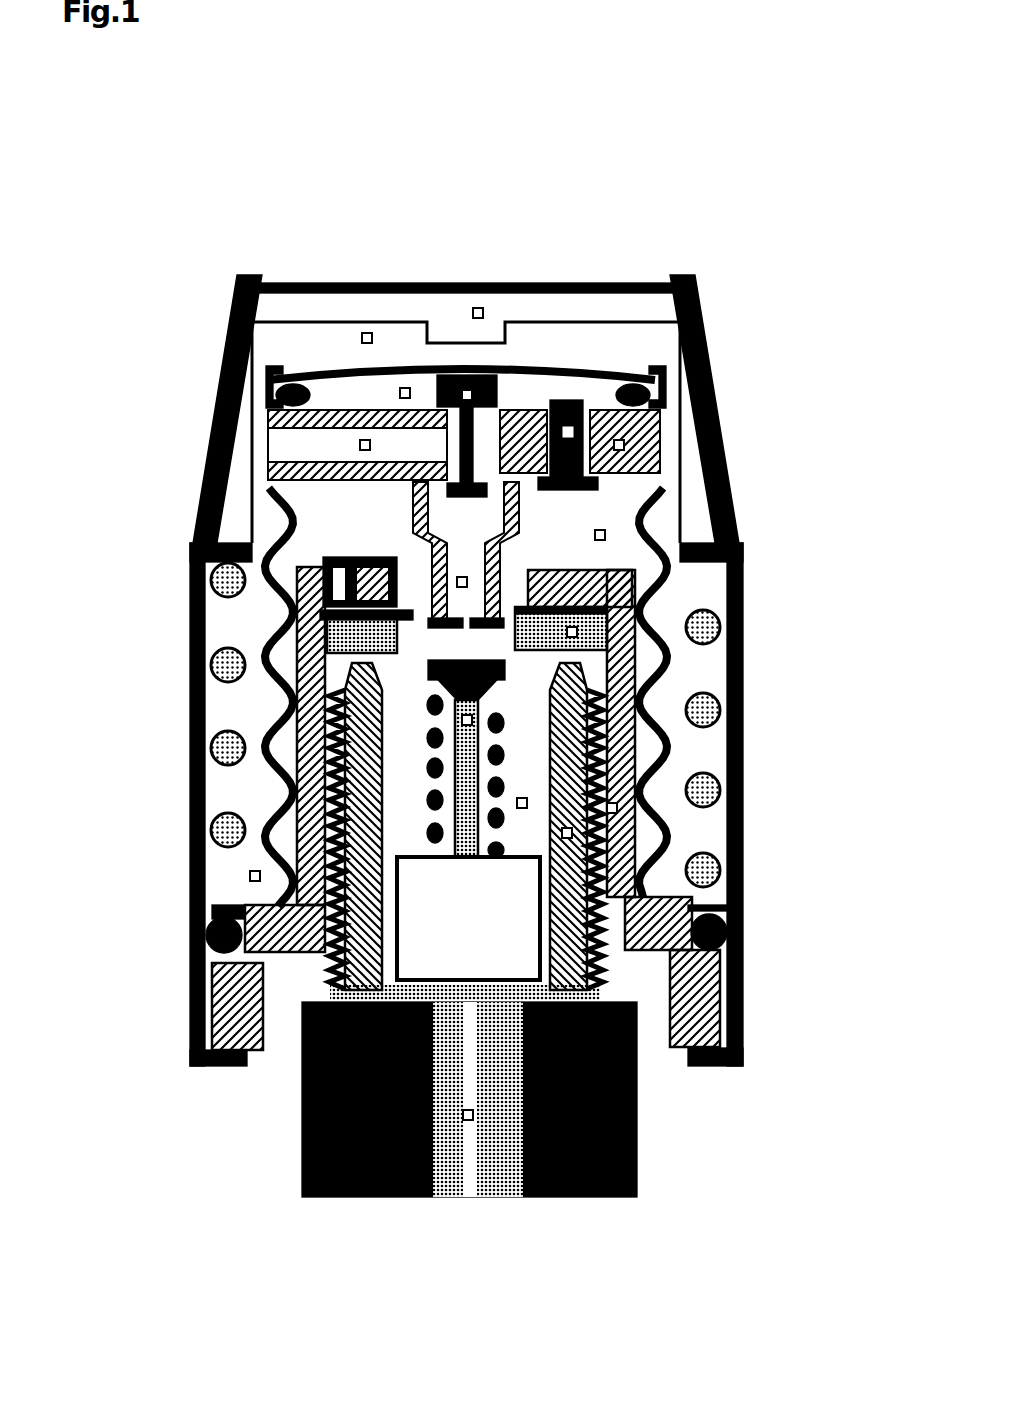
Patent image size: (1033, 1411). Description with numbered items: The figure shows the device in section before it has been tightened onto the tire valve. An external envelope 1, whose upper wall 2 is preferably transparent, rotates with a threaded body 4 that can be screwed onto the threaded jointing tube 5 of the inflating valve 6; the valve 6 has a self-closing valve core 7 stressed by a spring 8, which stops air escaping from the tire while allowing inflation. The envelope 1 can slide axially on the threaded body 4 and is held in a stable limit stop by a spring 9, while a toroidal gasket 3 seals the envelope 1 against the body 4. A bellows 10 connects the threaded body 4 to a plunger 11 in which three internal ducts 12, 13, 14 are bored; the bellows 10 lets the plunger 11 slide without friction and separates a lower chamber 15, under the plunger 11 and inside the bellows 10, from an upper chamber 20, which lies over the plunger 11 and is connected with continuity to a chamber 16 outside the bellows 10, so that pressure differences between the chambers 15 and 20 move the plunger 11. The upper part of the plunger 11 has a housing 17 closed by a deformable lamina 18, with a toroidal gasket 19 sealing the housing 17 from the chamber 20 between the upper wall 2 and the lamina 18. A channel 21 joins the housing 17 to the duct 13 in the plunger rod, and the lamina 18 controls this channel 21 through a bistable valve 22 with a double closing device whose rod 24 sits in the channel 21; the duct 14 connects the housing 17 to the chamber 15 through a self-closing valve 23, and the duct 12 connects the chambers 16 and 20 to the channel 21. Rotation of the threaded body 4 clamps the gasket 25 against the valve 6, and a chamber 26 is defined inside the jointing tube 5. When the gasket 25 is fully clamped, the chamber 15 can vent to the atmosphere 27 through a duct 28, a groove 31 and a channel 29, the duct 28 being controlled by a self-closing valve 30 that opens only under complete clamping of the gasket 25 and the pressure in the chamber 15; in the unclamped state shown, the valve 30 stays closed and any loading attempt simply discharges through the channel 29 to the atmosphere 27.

The external envelope 1 is at (180, 482).
The upper wall 2 is at (478, 313).
The toroidal gasket 3 is at (205, 940).
The threaded body 4 is at (690, 998).
The threaded jointing tube 5 is at (567, 835).
The inflating valve 6 is at (468, 1118).
The self-closing valve core 7 is at (495, 725).
The spring 8 is at (500, 755).
The spring 9 is at (217, 827).
The bellows 10 is at (265, 527).
The plunger 11 is at (625, 443).
The duct 12 is at (365, 445).
The duct 13 is at (205, 445).
The duct 14 is at (575, 395).
The chamber 15 is at (605, 535).
The chamber 16 is at (250, 872).
The housing 17 is at (405, 393).
The lamina 18 is at (300, 388).
The toroidal gasket 19 is at (655, 372).
The chamber 20 is at (367, 338).
The channel 21 is at (467, 395).
The bistable valve 22 is at (462, 582).
The self-closing valve 23 is at (568, 400).
The rod 24 is at (467, 720).
The gasket 25 is at (572, 628).
The chamber 26 is at (522, 808).
The atmosphere 27 is at (265, 1078).
The duct 28 is at (330, 720).
The channel 29 is at (190, 1050).
The self-closing valve 30 is at (335, 583).
The groove 31 is at (330, 633).